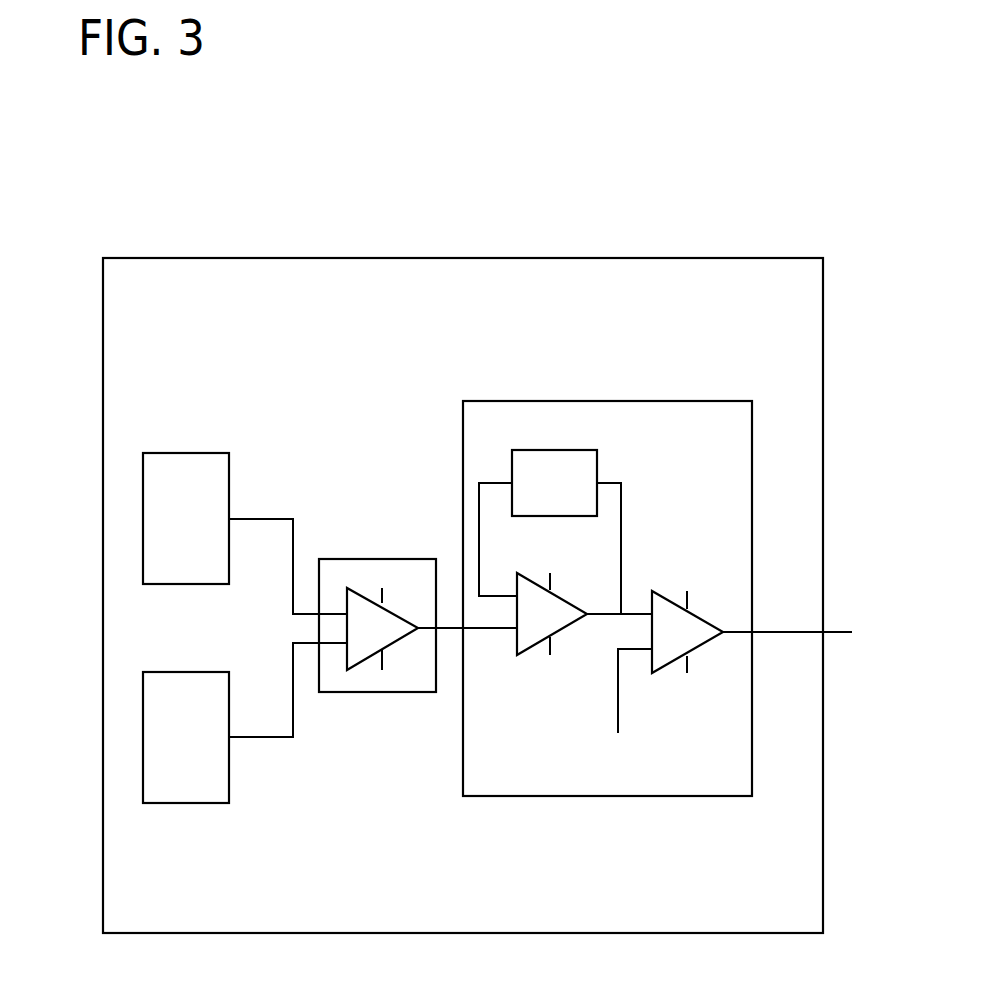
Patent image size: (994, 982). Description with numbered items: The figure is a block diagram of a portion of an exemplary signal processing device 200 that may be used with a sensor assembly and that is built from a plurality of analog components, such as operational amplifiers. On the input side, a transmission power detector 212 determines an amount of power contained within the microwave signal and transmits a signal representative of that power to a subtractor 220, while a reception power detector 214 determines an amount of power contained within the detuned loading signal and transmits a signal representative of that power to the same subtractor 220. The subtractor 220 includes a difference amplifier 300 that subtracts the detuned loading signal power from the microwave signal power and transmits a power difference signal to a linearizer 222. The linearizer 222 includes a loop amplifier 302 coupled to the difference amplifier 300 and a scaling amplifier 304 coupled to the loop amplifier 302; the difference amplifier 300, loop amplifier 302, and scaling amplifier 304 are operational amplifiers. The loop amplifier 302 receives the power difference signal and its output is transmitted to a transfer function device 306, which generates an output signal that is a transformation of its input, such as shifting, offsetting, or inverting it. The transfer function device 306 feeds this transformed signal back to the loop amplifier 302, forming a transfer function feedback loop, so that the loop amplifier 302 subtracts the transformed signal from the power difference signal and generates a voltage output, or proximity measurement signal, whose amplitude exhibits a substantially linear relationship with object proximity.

The signal processing device 200 is at (297, 203).
The transmission power detector 212 is at (188, 453).
The reception power detector 214 is at (187, 672).
The subtractor 220 is at (355, 559).
The linearizer 222 is at (603, 401).
The difference amplifier 300 is at (362, 688).
The loop amplifier 302 is at (532, 675).
The scaling amplifier 304 is at (704, 684).
The transfer function device 306 is at (537, 450).